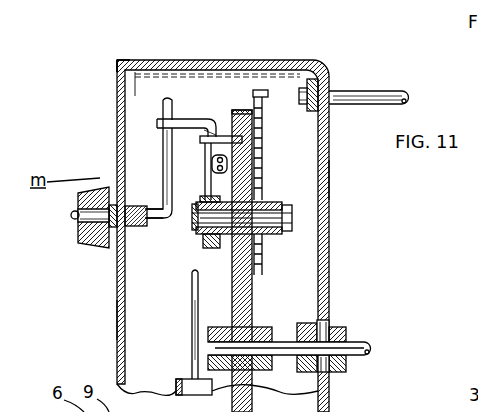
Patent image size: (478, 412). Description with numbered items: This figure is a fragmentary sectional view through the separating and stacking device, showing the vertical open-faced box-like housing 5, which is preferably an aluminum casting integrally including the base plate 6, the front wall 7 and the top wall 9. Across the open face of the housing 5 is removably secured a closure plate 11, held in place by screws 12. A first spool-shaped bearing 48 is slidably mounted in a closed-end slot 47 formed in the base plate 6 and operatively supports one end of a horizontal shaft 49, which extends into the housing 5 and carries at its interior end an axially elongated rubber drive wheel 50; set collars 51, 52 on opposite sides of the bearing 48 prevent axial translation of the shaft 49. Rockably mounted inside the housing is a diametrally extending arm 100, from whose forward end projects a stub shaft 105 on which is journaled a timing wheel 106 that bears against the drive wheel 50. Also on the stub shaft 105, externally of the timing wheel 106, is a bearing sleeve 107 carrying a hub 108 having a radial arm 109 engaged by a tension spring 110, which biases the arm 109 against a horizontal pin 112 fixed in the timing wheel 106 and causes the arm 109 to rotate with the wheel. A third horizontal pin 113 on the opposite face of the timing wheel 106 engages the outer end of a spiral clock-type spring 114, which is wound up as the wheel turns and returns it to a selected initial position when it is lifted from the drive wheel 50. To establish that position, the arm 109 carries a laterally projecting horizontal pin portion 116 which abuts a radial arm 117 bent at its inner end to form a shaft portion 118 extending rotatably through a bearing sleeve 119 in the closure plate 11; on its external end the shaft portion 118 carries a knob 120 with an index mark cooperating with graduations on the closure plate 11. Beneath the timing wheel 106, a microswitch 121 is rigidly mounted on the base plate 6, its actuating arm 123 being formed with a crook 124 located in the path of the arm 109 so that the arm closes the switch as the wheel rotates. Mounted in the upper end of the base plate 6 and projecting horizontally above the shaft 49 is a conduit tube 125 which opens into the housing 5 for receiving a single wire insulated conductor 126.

The housing 5 is at (134, 306).
The base plate 6 is at (328, 188).
The front wall 7 is at (272, 82).
The top wall 9 is at (239, 61).
The closure plate 11 is at (117, 328).
The screws 12 is at (118, 68).
The closed-end slot 47 is at (323, 325).
The spool-shaped bearing 48 is at (333, 371).
The horizontal shaft 49 is at (371, 350).
The rubber drive wheel 50 is at (216, 327).
The set collar 51 is at (307, 327).
The set collar 52 is at (347, 366).
The diametrally extending arm 100 is at (290, 234).
The stub shaft 105 is at (281, 217).
The timing wheel 106 is at (254, 97).
The bearing sleeve 107 is at (201, 228).
The hub 108 is at (215, 242).
The radial arm 109 is at (205, 143).
The tension spring 110 is at (211, 162).
The horizontal pin 112 is at (213, 135).
The third horizontal pin 113 is at (267, 133).
The spiral clock-type spring 114 is at (263, 163).
The horizontal pin portion 116 is at (187, 119).
The radial arm 117 is at (163, 178).
The shaft portion 118 is at (130, 258).
The bearing sleeve 119 is at (120, 253).
The knob 120 is at (78, 203).
The microswitch 121 is at (178, 378).
The actuating arm 123 is at (193, 330).
The crook 124 is at (193, 282).
The conduit tube 125 is at (365, 97).
The single wire insulated conductor 126 is at (300, 97).